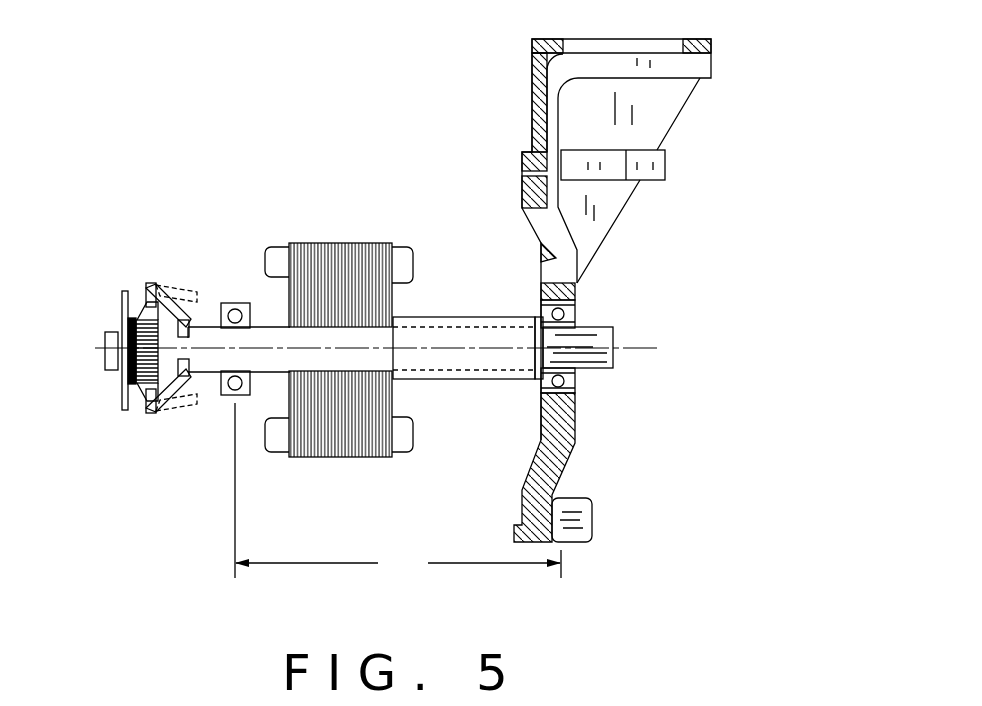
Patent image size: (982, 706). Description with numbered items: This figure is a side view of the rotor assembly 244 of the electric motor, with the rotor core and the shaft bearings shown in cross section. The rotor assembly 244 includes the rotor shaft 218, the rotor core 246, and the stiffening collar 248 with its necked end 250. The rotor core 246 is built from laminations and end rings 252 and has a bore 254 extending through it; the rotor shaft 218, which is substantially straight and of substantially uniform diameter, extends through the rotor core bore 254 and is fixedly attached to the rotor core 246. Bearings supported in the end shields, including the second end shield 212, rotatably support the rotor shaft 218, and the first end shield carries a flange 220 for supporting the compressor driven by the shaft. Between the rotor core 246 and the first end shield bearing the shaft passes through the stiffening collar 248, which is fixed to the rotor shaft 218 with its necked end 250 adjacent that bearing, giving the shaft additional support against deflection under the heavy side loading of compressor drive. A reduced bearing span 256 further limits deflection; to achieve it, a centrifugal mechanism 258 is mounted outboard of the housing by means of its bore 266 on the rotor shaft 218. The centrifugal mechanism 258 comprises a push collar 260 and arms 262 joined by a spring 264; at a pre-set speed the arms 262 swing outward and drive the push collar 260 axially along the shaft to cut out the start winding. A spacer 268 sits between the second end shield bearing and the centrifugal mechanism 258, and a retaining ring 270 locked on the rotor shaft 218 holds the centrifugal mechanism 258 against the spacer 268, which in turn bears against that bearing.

The second end shield 212 is at (579, 439).
The rotor shaft 218 is at (602, 320).
The flange 220 is at (701, 83).
The rotor assembly 244 is at (332, 304).
The rotor core 246 is at (332, 241).
The stiffening collar 248 is at (403, 316).
The necked end 250 is at (536, 381).
The end rings 252 is at (259, 246).
The bore 254 is at (296, 357).
The reduced bearing span 256 is at (398, 490).
The centrifugal mechanism 258 is at (148, 277).
The push collar 260 is at (122, 279).
The arms 262 is at (170, 315).
The spring 264 is at (121, 372).
The bore 266 is at (109, 326).
The spacer 268 is at (195, 389).
The retaining ring 270 is at (116, 390).